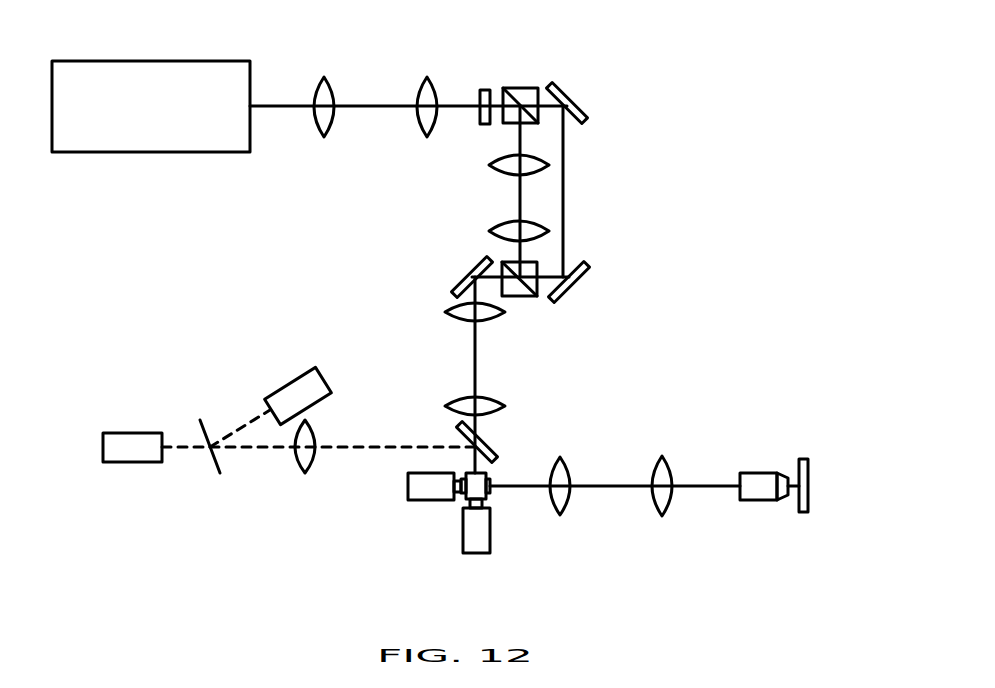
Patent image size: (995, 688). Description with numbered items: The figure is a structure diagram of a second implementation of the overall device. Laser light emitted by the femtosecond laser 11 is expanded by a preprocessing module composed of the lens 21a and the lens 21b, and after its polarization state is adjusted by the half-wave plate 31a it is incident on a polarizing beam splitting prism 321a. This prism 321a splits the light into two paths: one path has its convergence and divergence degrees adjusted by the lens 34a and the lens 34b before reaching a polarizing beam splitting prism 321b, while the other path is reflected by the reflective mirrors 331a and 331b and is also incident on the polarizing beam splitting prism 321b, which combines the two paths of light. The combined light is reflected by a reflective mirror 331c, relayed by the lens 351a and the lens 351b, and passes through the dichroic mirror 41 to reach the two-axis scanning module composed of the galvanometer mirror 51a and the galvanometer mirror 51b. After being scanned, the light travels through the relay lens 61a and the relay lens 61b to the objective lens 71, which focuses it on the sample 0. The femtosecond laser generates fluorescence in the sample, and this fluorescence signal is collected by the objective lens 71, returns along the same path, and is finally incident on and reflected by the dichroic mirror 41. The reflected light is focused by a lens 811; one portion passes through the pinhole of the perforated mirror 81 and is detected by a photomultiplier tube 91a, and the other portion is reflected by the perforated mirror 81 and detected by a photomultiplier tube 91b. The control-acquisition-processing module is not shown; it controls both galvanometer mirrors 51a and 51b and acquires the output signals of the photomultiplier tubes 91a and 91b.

The femtosecond laser 11 is at (155, 61).
The lens 21a is at (328, 75).
The lens 21b is at (432, 73).
The half-wave plate 31a is at (490, 88).
The polarizing beam splitting prism 321a is at (535, 87).
The reflective mirror 331a is at (580, 100).
The lens 34a is at (488, 162).
The lens 34b is at (488, 227).
The polarizing beam splitting prism 321b is at (537, 296).
The reflective mirror 331b is at (587, 268).
The reflective mirror 331c is at (458, 282).
The lens 351a is at (503, 318).
The lens 351b is at (452, 398).
The dichroic mirror 41 is at (503, 455).
The galvanometer mirror 51a is at (406, 490).
The galvanometer mirror 51b is at (462, 545).
The relay lens 61a is at (552, 517).
The relay lens 61b is at (655, 517).
The objective lens 71 is at (752, 500).
The sample 0 is at (800, 513).
The photomultiplier tube 91a is at (103, 447).
The photomultiplier tube 91b is at (330, 383).
The perforated mirror 81 is at (205, 473).
The lens 811 is at (298, 473).